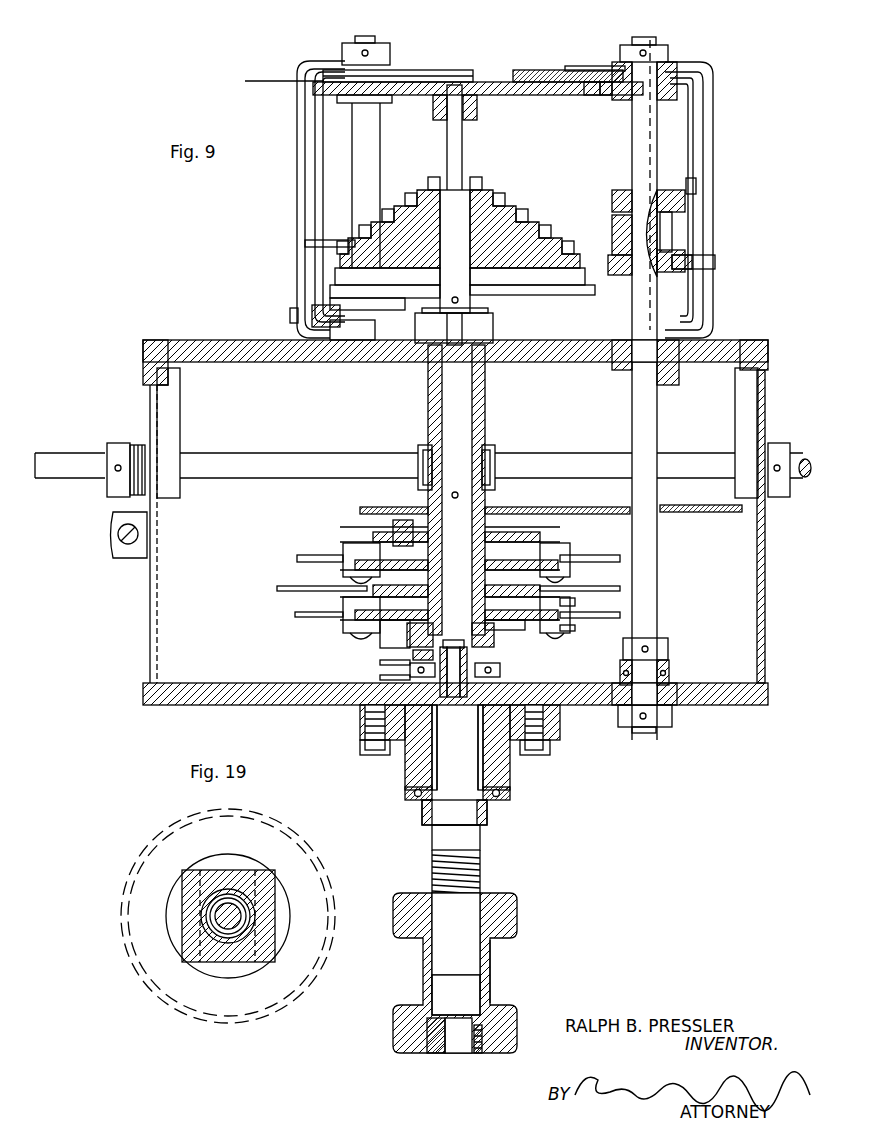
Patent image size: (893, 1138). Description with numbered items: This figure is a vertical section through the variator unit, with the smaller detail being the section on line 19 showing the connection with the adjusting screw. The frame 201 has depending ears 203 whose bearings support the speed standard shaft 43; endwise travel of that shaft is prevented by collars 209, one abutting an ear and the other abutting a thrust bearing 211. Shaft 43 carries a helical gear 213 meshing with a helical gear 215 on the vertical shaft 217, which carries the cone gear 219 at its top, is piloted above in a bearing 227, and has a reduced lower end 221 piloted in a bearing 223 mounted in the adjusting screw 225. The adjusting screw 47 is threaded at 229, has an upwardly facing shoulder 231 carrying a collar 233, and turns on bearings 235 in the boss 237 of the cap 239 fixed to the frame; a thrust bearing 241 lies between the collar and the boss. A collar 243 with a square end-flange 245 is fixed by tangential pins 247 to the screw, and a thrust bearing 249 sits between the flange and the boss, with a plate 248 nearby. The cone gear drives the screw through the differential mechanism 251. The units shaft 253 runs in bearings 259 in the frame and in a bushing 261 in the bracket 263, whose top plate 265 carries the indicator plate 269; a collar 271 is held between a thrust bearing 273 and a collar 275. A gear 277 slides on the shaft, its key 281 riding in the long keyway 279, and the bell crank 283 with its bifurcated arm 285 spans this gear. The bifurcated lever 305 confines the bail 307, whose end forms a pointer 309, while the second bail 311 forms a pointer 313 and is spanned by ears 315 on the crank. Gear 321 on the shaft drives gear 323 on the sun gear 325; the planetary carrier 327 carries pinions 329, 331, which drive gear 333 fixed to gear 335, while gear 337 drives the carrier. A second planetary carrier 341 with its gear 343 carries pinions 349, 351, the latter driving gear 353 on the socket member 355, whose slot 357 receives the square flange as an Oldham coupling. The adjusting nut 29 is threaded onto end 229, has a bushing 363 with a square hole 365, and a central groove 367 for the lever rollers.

In FIG. 9, the section line 19 is at (305, 660).
In FIG. 9, the adjusting nut 29 is at (515, 920).
In FIG. 9, the speed standard or 100% shaft 43 is at (48, 453).
In FIG. 9, the adjusting screw 47 is at (493, 838).
In FIG. 9, the frame 201 is at (222, 342).
In FIG. 9, the depending ears 203 is at (180, 438).
In FIG. 9, the collars 209 is at (110, 480).
In FIG. 9, the thrust bearing 211 is at (137, 445).
In FIG. 9, the helical gear 213 is at (425, 448).
In FIG. 9, the helical gear 215 is at (490, 448).
In FIG. 9, the shaft 217 is at (447, 150).
In FIG. 9, the cone gear 219 is at (495, 195).
In FIG. 9, the reduced lower end 221 is at (470, 668).
In FIG. 19, the reduced lower end 221 is at (240, 912).
In FIG. 9, the bearing 223 is at (500, 680).
In FIG. 19, the adjusting screw 225 is at (213, 905).
In FIG. 9, the bearing 227 is at (435, 118).
In FIG. 9, the threaded end 229 is at (483, 868).
In FIG. 9, the upwardly facing shoulder 231 is at (446, 828).
In FIG. 9, the collar 233 is at (422, 815).
In FIG. 9, the bearings 235 is at (432, 770).
In FIG. 9, the boss 237 is at (408, 750).
In FIG. 9, the cap 239 is at (553, 725).
In FIG. 9, the thrust bearing 241 is at (405, 796).
In FIG. 9, the collar 243 is at (425, 660).
In FIG. 19, the collar 243 is at (256, 920).
In FIG. 19, the square end-flange 245 is at (233, 892).
In FIG. 9, the tangential pins 247 is at (447, 650).
In FIG. 19, the tangential pins 247 is at (215, 870).
In FIG. 9, the plate 248 is at (380, 662).
In FIG. 9, the thrust bearing 249 is at (380, 677).
In FIG. 9, the differential mechanism 251 is at (278, 575).
In FIG. 9, the units shaft 253 is at (657, 572).
In FIG. 9, the bearings 259 is at (612, 375).
In FIG. 9, the bushing 261 is at (618, 100).
In FIG. 9, the bracket 263 is at (548, 98).
In FIG. 9, the top plate 265 is at (575, 96).
In FIG. 9, the indicator plate 269 is at (490, 82).
In FIG. 9, the collar 271 is at (668, 645).
In FIG. 9, the thrust bearing 273 is at (672, 668).
In FIG. 9, the collar 275 is at (668, 733).
In FIG. 9, the gear 277 is at (612, 232).
In FIG. 9, the keyway 279 is at (706, 120).
In FIG. 9, the key 281 is at (666, 232).
In FIG. 9, the bell crank 283 is at (608, 202).
In FIG. 9, the bifurcated arm 285 is at (686, 200).
In FIG. 9, the bifurcated lever 305 is at (698, 188).
In FIG. 9, the bail 307 is at (695, 152).
In FIG. 9, the pointer 309 is at (548, 58).
In FIG. 9, the second bail 311 is at (705, 334).
In FIG. 9, the pointer 313 is at (562, 66).
In FIG. 9, the ears 315 is at (715, 262).
In FIG. 9, the gear 321 is at (700, 514).
In FIG. 9, the gear 323 is at (512, 514).
In FIG. 9, the sun gear 325 is at (401, 531).
In FIG. 9, the planetary carrier 327 is at (570, 545).
In FIG. 9, the planetary pinions 329 is at (588, 550).
In FIG. 9, the planetary pinions 331 is at (343, 572).
In FIG. 9, the gear 333 is at (555, 580).
In FIG. 9, the gear 335 is at (505, 640).
In FIG. 9, the gear 337 is at (548, 548).
In FIG. 9, the planetary carrier 341 is at (576, 602).
In FIG. 9, the gear 343 is at (560, 592).
In FIG. 9, the planetary pinions 349 is at (600, 615).
In FIG. 9, the planetary pinions 351 is at (576, 628).
In FIG. 9, the gear 353 is at (372, 640).
In FIG. 19, the gear 353 is at (200, 1010).
In FIG. 9, the socket member 355 is at (428, 638).
In FIG. 19, the socket member 355 is at (173, 940).
In FIG. 19, the slot 357 is at (275, 950).
In FIG. 9, the bushing 363 is at (432, 1055).
In FIG. 9, the square hole 365 is at (465, 1055).
In FIG. 9, the central groove 367 is at (495, 945).